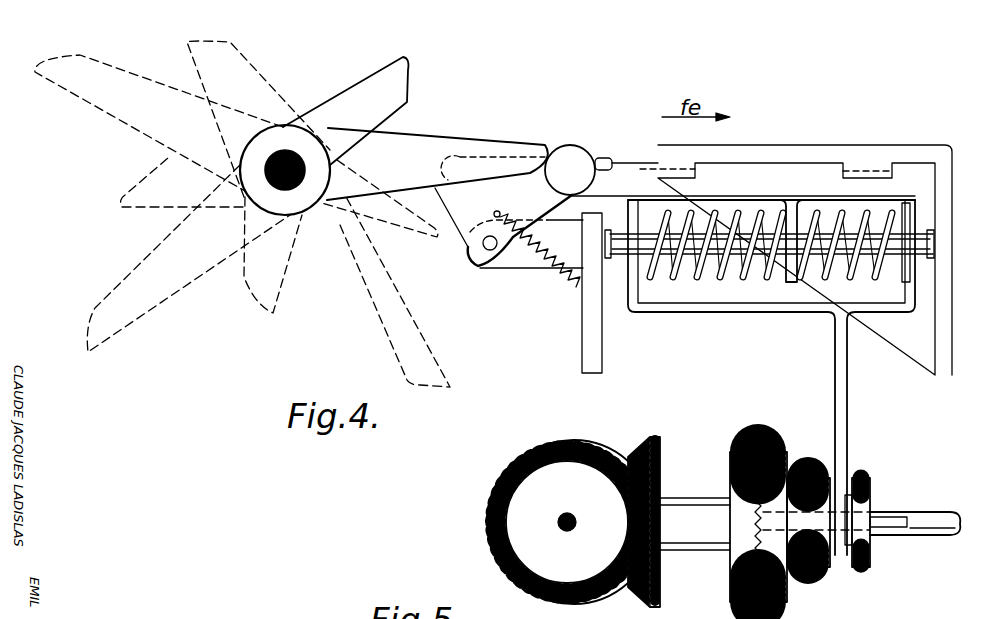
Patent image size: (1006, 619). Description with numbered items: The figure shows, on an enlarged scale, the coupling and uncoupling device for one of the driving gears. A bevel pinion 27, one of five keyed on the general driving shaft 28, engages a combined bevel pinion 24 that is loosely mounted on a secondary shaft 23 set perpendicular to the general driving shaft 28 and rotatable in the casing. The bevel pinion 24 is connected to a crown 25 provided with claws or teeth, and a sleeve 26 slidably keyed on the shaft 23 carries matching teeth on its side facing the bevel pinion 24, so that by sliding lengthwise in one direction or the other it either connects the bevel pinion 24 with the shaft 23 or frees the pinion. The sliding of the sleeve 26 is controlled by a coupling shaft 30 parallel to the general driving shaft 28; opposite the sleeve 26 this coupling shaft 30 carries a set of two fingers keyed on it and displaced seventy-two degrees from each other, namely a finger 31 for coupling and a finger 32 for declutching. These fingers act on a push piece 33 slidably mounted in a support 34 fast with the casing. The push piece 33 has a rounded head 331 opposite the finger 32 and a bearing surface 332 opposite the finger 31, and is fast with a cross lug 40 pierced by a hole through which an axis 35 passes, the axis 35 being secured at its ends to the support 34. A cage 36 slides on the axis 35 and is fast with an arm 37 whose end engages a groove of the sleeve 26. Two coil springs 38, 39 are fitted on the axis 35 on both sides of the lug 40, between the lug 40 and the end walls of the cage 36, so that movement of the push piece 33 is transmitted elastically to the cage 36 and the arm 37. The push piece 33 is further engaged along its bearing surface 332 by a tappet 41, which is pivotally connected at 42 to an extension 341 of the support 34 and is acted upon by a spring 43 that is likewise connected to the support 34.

In FIG. 4, the coupling shaft 30 is at (290, 190).
In FIG. 4, the finger for coupling 31 is at (407, 83).
In FIG. 4, the finger for declutching 32 is at (463, 147).
In FIG. 4, the rounded head 331 is at (573, 152).
In FIG. 4, the bearing surface 332 is at (597, 195).
In FIG. 4, the push piece 33 is at (760, 178).
In FIG. 4, the support 34 is at (870, 162).
In FIG. 4, the extension of support 341 is at (523, 258).
In FIG. 4, the axis 35 is at (923, 247).
In FIG. 4, the cage 36 is at (908, 290).
In FIG. 4, the arm 37 is at (848, 395).
In FIG. 4, the coil spring 38 is at (897, 220).
In FIG. 4, the coil spring 39 is at (713, 213).
In FIG. 4, the cross lug 40 is at (790, 283).
In FIG. 4, the tappet 41 is at (512, 195).
In FIG. 4, the pivot 42 is at (487, 249).
In FIG. 4, the spring 43 is at (562, 285).
In FIG. 5, the secondary shaft 23 is at (927, 517).
In FIG. 5, the combined bevel pinion 24 is at (642, 445).
In FIG. 5, the crown 25 is at (765, 452).
In FIG. 5, the sleeve 26 is at (860, 480).
In FIG. 5, the bevel pinion 27 is at (542, 452).
In FIG. 5, the general driving shaft 28 is at (557, 520).